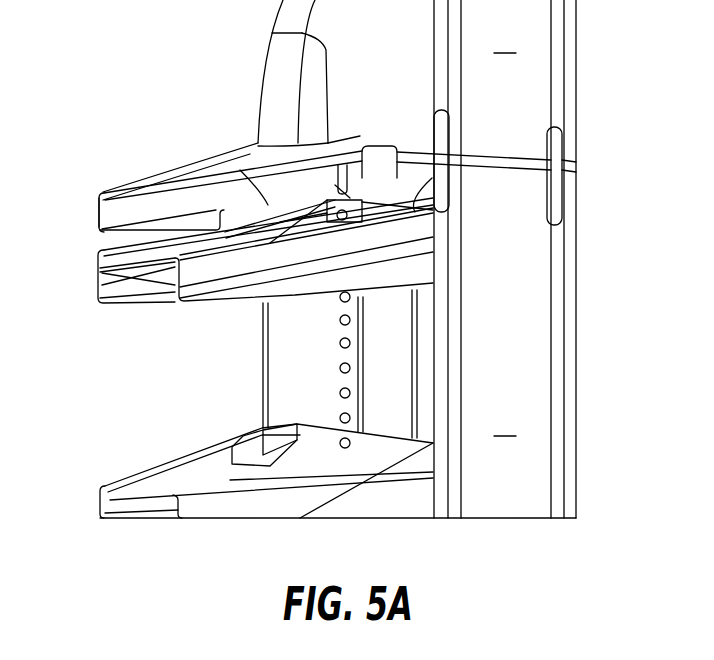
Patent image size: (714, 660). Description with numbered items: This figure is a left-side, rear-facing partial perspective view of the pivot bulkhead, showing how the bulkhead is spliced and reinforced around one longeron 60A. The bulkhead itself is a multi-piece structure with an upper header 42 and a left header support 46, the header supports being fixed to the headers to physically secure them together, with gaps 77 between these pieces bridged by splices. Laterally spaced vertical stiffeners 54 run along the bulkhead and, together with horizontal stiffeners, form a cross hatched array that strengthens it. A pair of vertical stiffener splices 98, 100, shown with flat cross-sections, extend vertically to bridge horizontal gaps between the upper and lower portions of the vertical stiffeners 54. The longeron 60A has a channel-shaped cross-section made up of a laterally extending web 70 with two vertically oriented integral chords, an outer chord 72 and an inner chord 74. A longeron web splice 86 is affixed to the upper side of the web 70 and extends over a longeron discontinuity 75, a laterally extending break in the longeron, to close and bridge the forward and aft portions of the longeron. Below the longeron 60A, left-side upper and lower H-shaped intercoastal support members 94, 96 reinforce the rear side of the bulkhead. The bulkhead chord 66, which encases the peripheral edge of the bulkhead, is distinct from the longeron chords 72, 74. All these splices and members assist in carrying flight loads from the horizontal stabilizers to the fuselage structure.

The upper header 42 is at (505, 44).
The left header support 46 is at (505, 427).
The vertical stiffeners 54 is at (557, 278).
The longeron 60A is at (122, 176).
The bulkhead chord 66 is at (313, 85).
The longeron web 70 is at (185, 177).
The outer chord 72 is at (100, 220).
The inner chord 74 is at (268, 205).
The longeron discontinuity 75 is at (372, 147).
The gaps 77 is at (502, 166).
The longeron web splice 86 is at (255, 138).
The upper intercoastal support member 94 is at (218, 298).
The lower intercoastal support member 96 is at (125, 478).
The vertical stiffener splice 98 is at (443, 128).
The vertical stiffener splice 100 is at (555, 207).